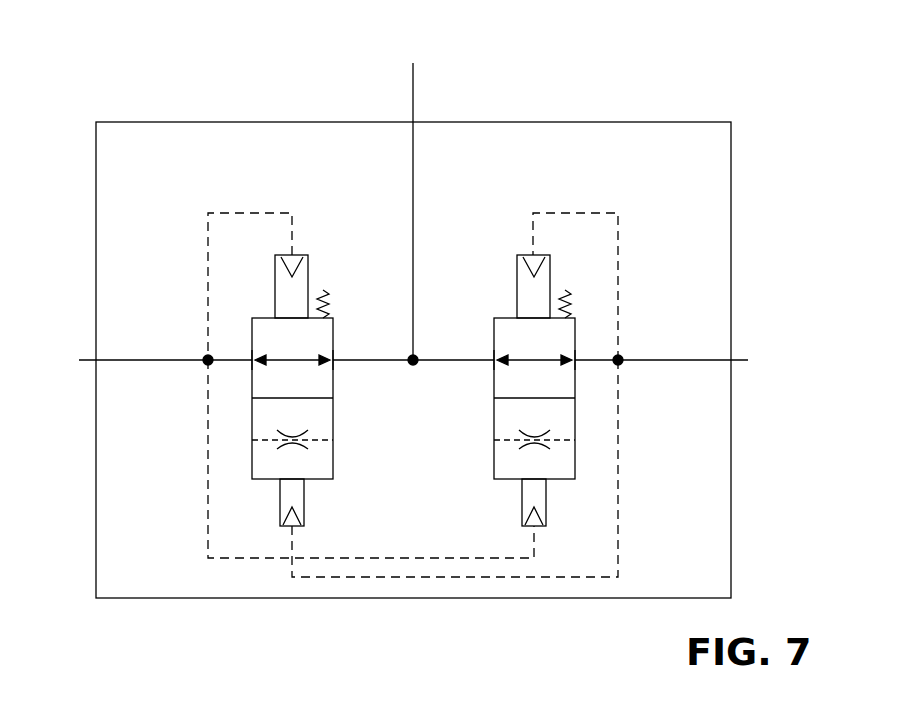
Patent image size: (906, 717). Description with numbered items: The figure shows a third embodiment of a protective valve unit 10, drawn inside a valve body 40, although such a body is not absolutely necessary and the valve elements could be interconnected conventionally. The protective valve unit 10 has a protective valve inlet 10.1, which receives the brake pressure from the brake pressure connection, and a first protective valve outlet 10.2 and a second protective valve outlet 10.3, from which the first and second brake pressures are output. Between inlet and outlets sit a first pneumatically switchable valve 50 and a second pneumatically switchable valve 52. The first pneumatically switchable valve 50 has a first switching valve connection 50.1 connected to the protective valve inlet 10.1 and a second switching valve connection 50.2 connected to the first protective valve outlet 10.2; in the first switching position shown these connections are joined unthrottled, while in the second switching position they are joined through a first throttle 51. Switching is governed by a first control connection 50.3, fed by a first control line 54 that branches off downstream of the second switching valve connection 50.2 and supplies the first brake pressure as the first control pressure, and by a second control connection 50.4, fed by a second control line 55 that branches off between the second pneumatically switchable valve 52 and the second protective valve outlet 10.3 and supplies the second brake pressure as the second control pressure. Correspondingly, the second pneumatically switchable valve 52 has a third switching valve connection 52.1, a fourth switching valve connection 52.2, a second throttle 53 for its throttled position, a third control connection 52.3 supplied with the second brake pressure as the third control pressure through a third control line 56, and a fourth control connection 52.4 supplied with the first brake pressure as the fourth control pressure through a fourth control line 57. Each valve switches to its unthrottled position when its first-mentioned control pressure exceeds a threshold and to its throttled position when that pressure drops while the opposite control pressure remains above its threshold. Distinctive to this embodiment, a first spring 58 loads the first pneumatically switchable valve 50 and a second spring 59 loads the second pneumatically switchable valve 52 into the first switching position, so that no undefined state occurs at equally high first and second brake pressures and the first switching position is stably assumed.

The protective valve unit 10 is at (133, 97).
The protective valve inlet 10.1 is at (415, 121).
The first protective valve outlet 10.2 is at (731, 360).
The second protective valve outlet 10.3 is at (96, 360).
The valve body 40 is at (668, 122).
The first pneumatically switchable valve 50 is at (564, 365).
The first switching valve connection 50.1 is at (494, 358).
The second switching valve connection 50.2 is at (575, 363).
The first control connection 50.3 is at (532, 254).
The second control connection 50.4 is at (540, 528).
The first throttle 51 is at (535, 447).
The second pneumatically switchable valve 52 is at (267, 361).
The third switching valve connection 52.1 is at (334, 354).
The fourth switching valve connection 52.2 is at (252, 364).
The third control connection 52.3 is at (292, 255).
The fourth control connection 52.4 is at (295, 528).
The second throttle 53 is at (293, 447).
The first control line 54 is at (566, 213).
The second control line 55 is at (453, 557).
The third control line 56 is at (208, 253).
The fourth control line 57 is at (403, 577).
The first spring 58 is at (565, 291).
The second spring 59 is at (323, 291).